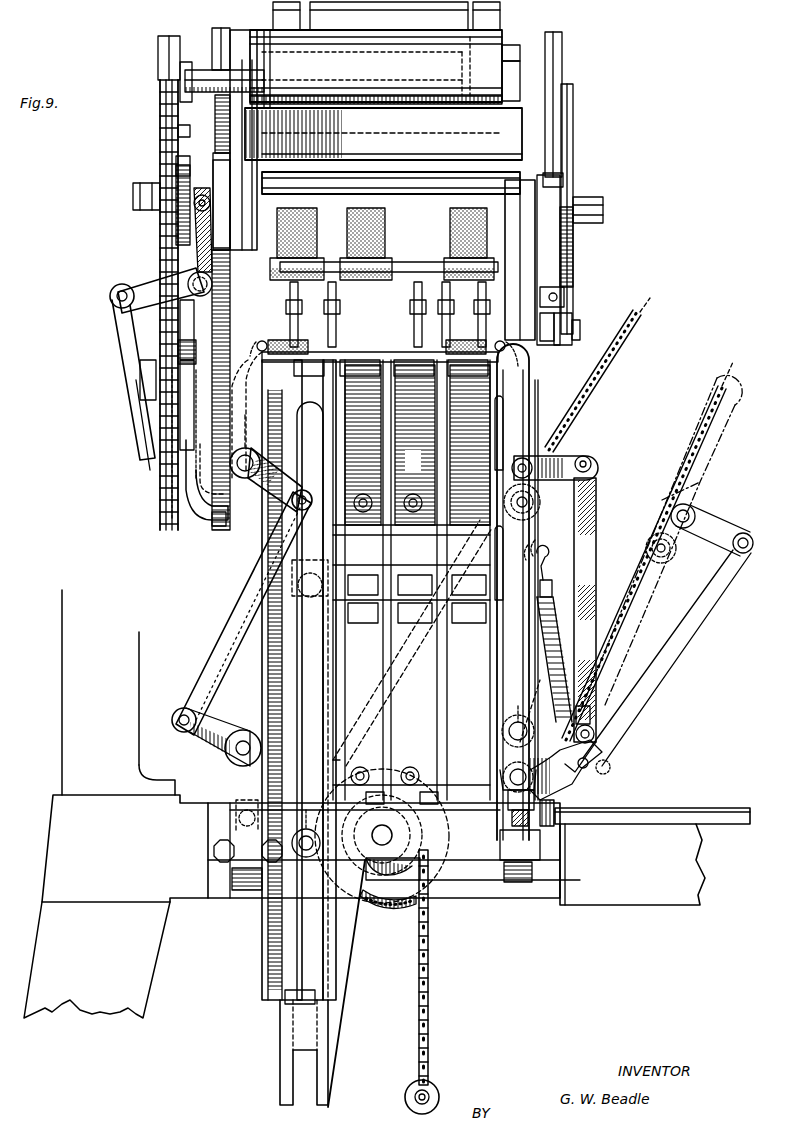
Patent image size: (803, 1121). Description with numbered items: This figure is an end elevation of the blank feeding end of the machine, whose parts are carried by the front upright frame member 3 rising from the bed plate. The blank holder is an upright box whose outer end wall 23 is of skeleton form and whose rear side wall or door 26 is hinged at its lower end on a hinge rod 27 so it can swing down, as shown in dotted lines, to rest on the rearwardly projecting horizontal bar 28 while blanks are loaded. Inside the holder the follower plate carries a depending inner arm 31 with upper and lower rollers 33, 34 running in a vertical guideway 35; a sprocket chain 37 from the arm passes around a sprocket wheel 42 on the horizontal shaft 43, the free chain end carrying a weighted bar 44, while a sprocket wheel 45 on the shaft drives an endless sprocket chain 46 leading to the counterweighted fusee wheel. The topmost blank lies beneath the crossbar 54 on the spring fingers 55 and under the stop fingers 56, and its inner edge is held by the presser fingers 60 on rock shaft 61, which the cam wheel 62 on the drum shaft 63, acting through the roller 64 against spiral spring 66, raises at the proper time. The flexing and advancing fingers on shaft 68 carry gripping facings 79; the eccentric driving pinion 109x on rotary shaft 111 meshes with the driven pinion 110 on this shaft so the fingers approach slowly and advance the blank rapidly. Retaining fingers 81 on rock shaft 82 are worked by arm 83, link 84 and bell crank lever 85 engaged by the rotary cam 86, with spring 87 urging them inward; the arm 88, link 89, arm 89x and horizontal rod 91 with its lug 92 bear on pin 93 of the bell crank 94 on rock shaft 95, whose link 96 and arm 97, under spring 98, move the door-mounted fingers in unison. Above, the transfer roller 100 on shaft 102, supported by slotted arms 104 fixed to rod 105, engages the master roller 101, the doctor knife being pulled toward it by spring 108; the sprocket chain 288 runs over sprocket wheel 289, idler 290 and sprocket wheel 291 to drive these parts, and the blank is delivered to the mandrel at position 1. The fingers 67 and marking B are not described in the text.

The position 1 is at (632, 864).
The front upright frame member 3 is at (136, 700).
The outer end wall 23 is at (434, 516).
The rear side wall or door 26 is at (503, 668).
The hinge rod 27 is at (510, 776).
The horizontal bar 28 is at (630, 814).
The inner depending arm 31 is at (318, 650).
The upper roller 33 is at (310, 568).
The lower roller 34 is at (306, 830).
The vertical guideway 35 is at (328, 684).
The sprocket chain 37 is at (430, 980).
The sprocket wheel 42 is at (388, 870).
The horizontal shaft 43 is at (386, 836).
The weighted bar 44 is at (430, 1088).
The sprocket wheel 45 is at (376, 912).
The endless sprocket chain 46 is at (576, 400).
The crossbar 54 is at (362, 360).
The spring fingers 55 is at (298, 350).
The stop fingers 56 is at (452, 344).
The presser fingers 60 is at (312, 331).
The rock shaft 61 is at (566, 298).
The cam wheel 62 is at (574, 160).
The shaft 63 is at (604, 209).
The roller 64 is at (568, 332).
The spiral spring 66 is at (572, 268).
The rod 67 is at (360, 322).
The shaft 68 is at (406, 264).
The blank gripping facings 79 is at (347, 224).
The blank retaining fingers 81 is at (258, 350).
The rock shaft 82 is at (245, 448).
The arm 83 is at (206, 496).
The link 84 is at (128, 352).
The bell crank lever 85 is at (136, 286).
The rotary cam 86 is at (222, 240).
The spring 87 is at (190, 320).
The arm 88 is at (262, 492).
The link 89 is at (220, 640).
The arm 89x is at (206, 738).
The horizontal rod 91 is at (292, 893).
The lug 92 is at (554, 806).
The pin 93 is at (506, 798).
The bell crank 94 is at (556, 776).
The rock shaft 95 is at (518, 720).
The link 96 is at (596, 536).
The arm 97 is at (560, 456).
The spring 98 is at (556, 604).
The transfer roller 100 is at (272, 12).
The master roller 101 is at (376, 67).
The shaft 102 is at (525, 50).
The arms 104 is at (224, 42).
The rod 105 is at (386, 186).
The spring 108 is at (214, 115).
The driving pinion 109x is at (228, 396).
The driven pinion 110 is at (230, 280).
The rotary shaft 111 is at (140, 388).
The sprocket chain 288 is at (176, 133).
The sprocket wheel 289 is at (190, 432).
The idler sprocket wheel 290 is at (175, 165).
The sprocket wheel 291 is at (158, 67).
The bottle B is at (417, 445).